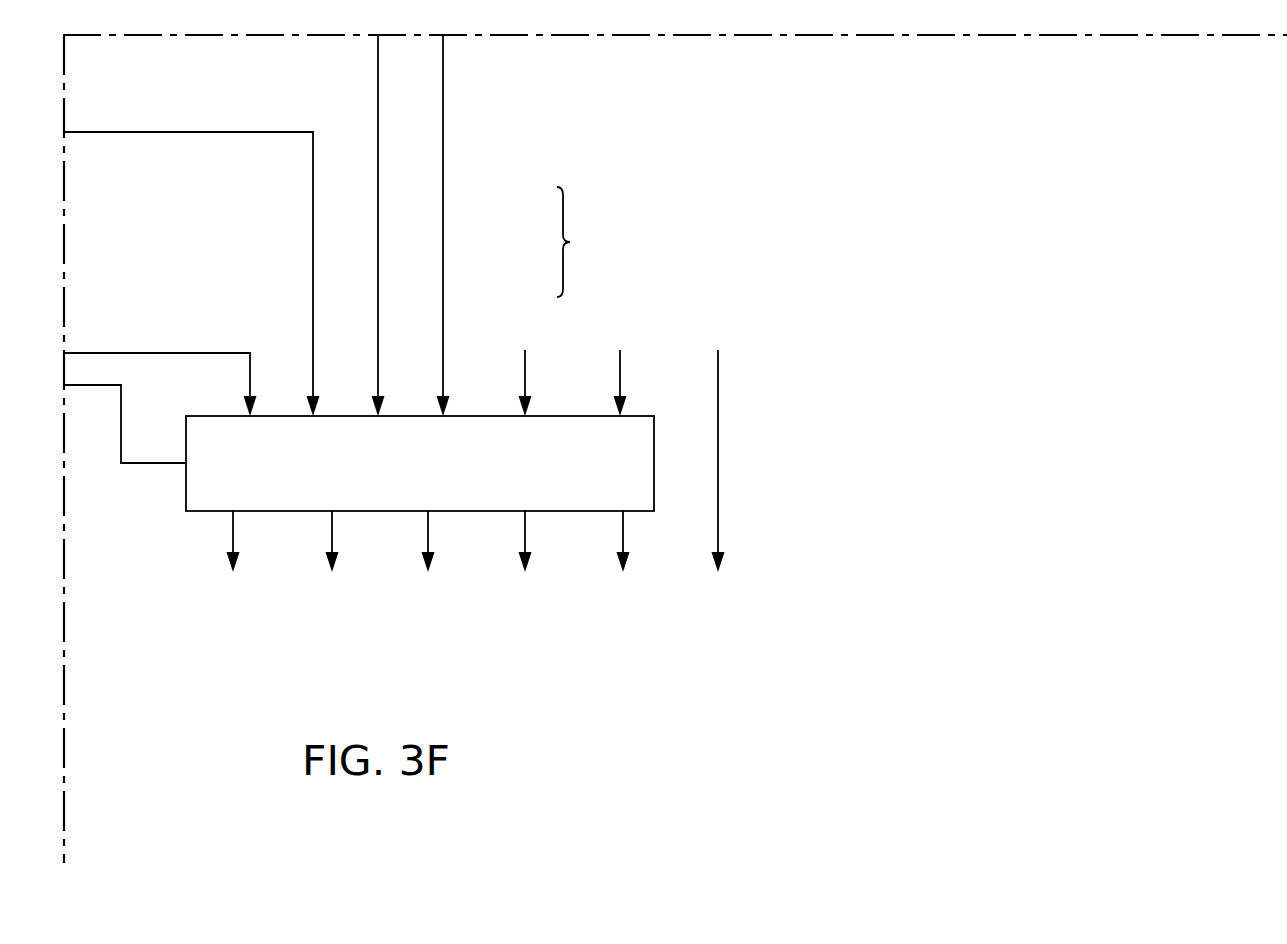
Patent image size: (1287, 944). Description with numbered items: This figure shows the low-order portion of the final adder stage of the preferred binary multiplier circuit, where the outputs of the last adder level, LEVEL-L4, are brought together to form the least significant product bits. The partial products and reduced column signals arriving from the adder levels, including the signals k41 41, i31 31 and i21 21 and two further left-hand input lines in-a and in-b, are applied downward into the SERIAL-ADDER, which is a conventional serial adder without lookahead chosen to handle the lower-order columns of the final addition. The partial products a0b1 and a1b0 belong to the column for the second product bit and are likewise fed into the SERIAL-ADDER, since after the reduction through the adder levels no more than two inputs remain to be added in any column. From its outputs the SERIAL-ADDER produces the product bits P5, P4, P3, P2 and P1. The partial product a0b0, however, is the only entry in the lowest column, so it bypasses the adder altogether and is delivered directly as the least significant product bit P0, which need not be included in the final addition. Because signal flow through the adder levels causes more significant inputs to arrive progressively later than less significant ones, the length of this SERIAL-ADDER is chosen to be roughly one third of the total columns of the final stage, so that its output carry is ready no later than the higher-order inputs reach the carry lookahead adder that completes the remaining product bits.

The serial adder SERIAL-ADDER is at (420, 463).
The carry signal k41 input k41 is at (191, 274).
The carry signal k41 input 41 is at (240, 133).
The intermediate signal i31 input i31 is at (343, 225).
The intermediate signal i31 input 31 is at (378, 115).
The intermediate signal i21 input i21 is at (462, 225).
The final adder 21 is at (443, 117).
The adder level L4 LEVEL-L4 is at (632, 242).
The partial product a0b1 is at (517, 367).
The partial product a1b0 is at (612, 367).
The partial product a0b0 is at (710, 445).
The product bit P5 is at (224, 562).
The product bit P4 is at (322, 562).
The product bit P3 is at (419, 562).
The product bit P2 is at (516, 562).
The product bit P1 is at (613, 562).
The product bit P0 is at (708, 597).
The left input line a in-a is at (160, 384).
The left input line b in-b is at (124, 424).